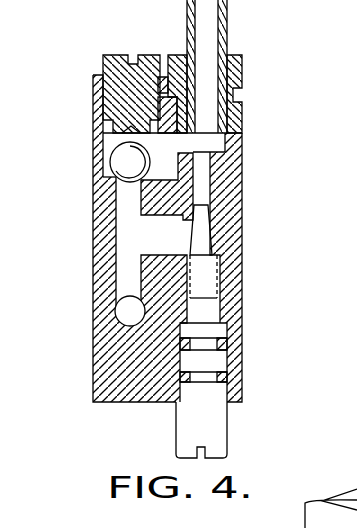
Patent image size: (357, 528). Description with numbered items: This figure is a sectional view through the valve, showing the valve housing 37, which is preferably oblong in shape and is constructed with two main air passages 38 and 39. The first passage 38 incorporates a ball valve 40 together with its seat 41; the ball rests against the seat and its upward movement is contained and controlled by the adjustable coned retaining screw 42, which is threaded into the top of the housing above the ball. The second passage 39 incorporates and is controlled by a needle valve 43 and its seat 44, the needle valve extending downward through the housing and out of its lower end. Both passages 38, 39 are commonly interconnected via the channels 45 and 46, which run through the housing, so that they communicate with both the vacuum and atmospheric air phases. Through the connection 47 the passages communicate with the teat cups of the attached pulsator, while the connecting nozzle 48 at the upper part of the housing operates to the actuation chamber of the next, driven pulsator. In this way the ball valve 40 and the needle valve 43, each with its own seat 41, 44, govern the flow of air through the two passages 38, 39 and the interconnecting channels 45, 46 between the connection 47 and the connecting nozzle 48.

The valve housing 37 is at (100, 226).
The main air passage 38 is at (138, 262).
The main air passage 39 is at (205, 190).
The ball valve 40 is at (110, 156).
The seat 41 is at (104, 179).
The adjustable coned retaining screw 42 is at (113, 55).
The needle valve 43 is at (222, 288).
The seat 44 is at (212, 214).
The channel 45 is at (212, 250).
The channel 46 is at (214, 143).
The connection 47 is at (129, 313).
The connecting nozzle 48 is at (237, 73).